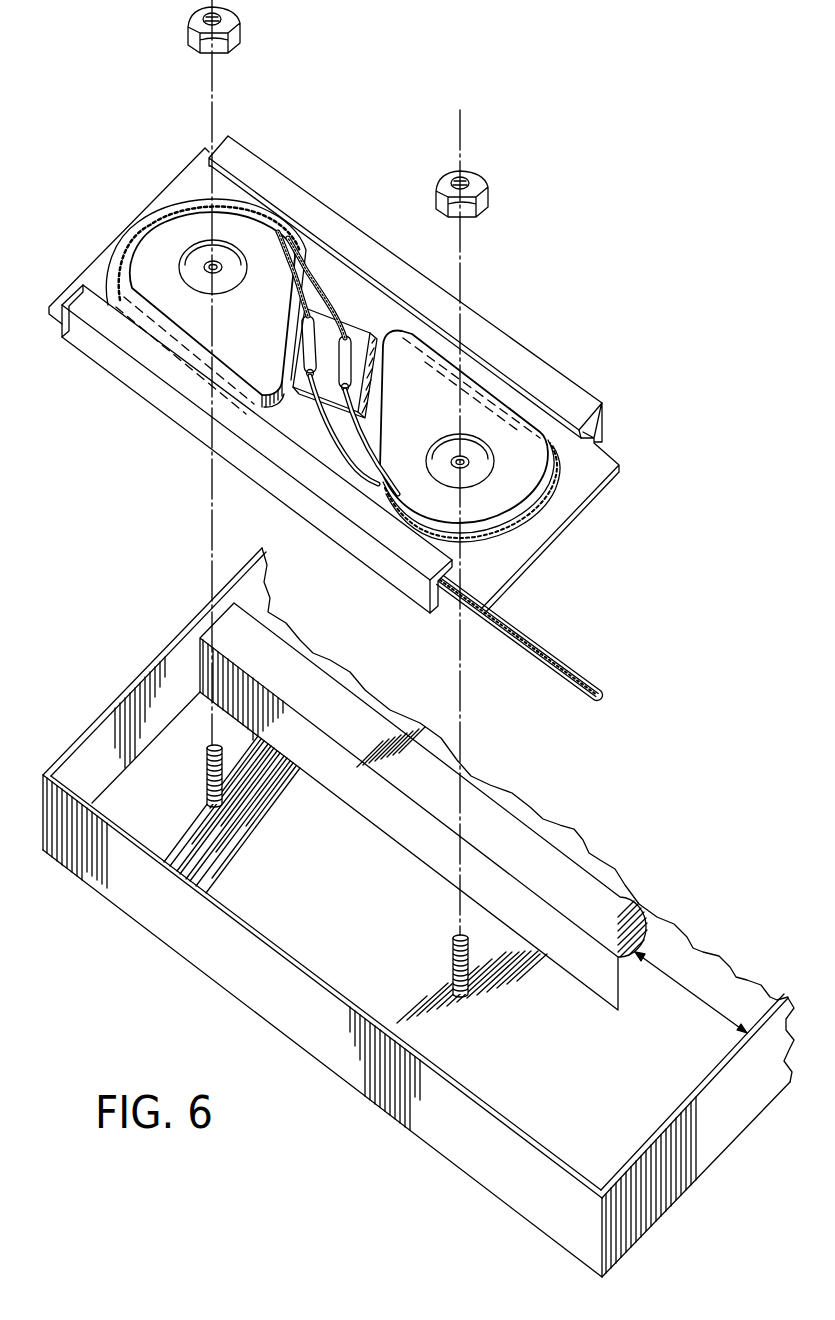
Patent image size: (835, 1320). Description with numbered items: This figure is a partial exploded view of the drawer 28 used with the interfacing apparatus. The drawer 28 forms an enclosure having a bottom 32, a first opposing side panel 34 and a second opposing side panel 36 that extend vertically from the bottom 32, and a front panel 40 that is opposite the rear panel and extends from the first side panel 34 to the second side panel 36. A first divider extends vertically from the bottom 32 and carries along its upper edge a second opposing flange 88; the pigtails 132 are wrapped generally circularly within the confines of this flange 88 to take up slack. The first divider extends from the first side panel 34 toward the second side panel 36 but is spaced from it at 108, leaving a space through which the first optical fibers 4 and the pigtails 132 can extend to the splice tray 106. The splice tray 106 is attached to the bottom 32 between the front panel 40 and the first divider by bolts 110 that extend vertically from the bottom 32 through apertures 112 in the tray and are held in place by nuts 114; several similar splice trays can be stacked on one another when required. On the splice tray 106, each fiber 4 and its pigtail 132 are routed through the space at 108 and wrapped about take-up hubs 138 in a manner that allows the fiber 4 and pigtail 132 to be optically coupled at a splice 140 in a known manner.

The first optical fibers 4 is at (523, 632).
The drawer 28 is at (708, 1200).
The bottom 32 is at (687, 1052).
The first opposing side panel 34 is at (150, 663).
The second opposing side panel 36 is at (700, 1147).
The front panel 40 is at (522, 1196).
The second opposing flange 88 is at (523, 840).
The splice tray 106 is at (583, 547).
The space 108 is at (667, 967).
The bolts 110 is at (205, 783).
The apertures 112 is at (214, 268).
The nuts 114 is at (219, 43).
The pigtail 132 is at (506, 648).
The take-up hubs 138 is at (153, 277).
The splice 140 is at (313, 348).